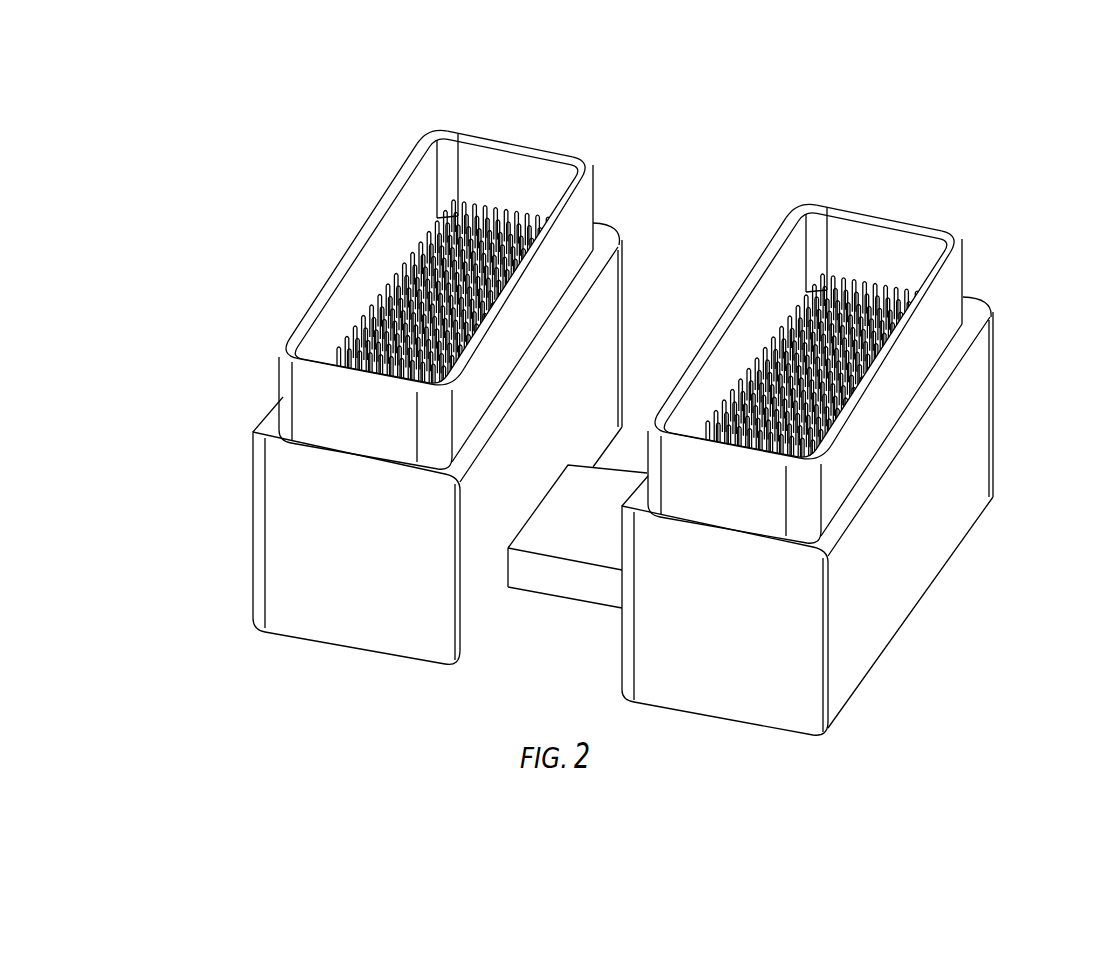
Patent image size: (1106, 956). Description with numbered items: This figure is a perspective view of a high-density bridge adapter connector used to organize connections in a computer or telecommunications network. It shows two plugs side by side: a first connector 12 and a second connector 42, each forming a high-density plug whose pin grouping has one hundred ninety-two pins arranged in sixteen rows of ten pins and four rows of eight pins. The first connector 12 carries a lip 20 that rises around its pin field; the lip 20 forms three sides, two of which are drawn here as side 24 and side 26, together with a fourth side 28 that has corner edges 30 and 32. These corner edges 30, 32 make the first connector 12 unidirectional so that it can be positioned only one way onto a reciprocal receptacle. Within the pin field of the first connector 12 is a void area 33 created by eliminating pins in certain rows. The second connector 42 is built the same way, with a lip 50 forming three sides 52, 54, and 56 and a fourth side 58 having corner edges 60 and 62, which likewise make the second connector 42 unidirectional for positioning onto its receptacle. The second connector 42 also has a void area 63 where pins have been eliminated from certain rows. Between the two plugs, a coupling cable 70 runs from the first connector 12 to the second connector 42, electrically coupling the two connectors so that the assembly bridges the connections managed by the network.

The first connector 12 is at (237, 524).
The lip 20 is at (410, 371).
The side 24 is at (325, 407).
The side 26 is at (357, 246).
The fourth side 28 is at (512, 142).
The corner edge 30 is at (589, 168).
The corner edge 32 is at (442, 132).
The void area 33 is at (442, 228).
The second connector 42 is at (957, 560).
The lip 50 is at (846, 445).
The side 52 is at (917, 306).
The side 54 is at (737, 448).
The side 56 is at (730, 300).
The fourth side 58 is at (883, 212).
The corner edge 60 is at (958, 244).
The corner edge 62 is at (810, 205).
The void area 63 is at (815, 297).
The coupling cable 70 is at (558, 583).